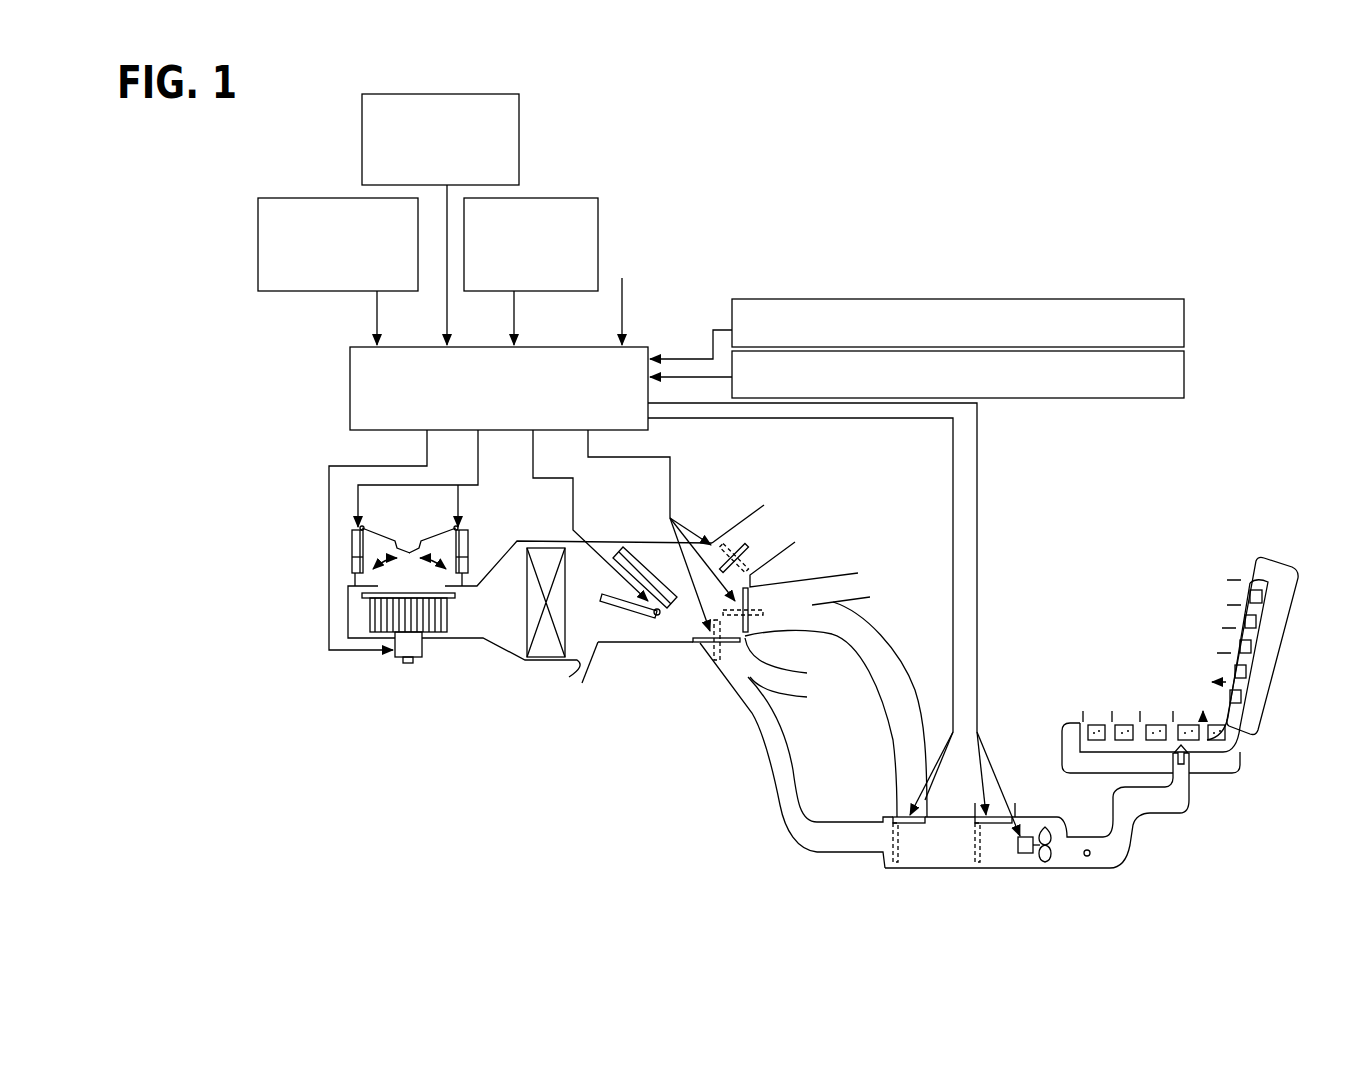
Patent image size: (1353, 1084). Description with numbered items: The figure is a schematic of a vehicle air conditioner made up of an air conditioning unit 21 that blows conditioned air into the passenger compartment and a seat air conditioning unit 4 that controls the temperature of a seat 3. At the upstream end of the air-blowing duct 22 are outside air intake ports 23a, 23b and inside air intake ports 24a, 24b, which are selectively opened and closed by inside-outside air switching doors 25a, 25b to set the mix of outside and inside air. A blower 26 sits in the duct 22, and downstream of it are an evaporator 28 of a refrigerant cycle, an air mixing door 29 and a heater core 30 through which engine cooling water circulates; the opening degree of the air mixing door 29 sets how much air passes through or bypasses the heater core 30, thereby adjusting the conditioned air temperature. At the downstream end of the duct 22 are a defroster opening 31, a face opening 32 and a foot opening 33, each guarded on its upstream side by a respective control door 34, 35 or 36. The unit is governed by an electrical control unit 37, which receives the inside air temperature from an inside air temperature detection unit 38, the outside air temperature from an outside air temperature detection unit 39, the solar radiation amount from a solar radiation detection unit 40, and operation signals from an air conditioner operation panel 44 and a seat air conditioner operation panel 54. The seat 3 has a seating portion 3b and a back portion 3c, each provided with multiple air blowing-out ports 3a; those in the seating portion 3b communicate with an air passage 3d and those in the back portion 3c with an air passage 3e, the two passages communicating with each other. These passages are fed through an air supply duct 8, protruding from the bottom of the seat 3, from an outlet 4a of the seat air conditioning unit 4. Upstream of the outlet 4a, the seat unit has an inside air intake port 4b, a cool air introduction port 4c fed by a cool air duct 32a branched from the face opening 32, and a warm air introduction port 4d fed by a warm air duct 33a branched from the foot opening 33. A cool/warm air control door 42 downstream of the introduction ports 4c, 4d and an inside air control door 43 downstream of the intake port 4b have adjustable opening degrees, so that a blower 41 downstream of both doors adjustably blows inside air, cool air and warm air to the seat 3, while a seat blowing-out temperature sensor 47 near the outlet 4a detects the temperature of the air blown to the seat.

The seat 3 is at (1218, 606).
The air blowing-out ports 3a is at (1160, 723).
The seating portion 3b is at (1070, 725).
The back portion 3c is at (1255, 562).
The air passage 3d is at (1097, 725).
The air passage 3e is at (1250, 657).
The seat air conditioning unit 4 is at (883, 875).
The outlet 4a is at (1067, 853).
The inside air intake port 4b is at (997, 805).
The cool air introduction port 4c is at (903, 808).
The warm air introduction port 4d is at (856, 846).
The air supply duct 8 is at (1123, 822).
The air conditioning unit 21 is at (551, 668).
The air-blowing duct 22 is at (655, 645).
The outside air intake port 23a is at (392, 530).
The outside air intake port 23b is at (428, 530).
The inside air intake port 24a is at (352, 548).
The inside air intake port 24b is at (468, 546).
The inside-outside air switching door 25a is at (350, 557).
The inside-outside air switching door 25b is at (470, 556).
The blower 26 is at (358, 614).
The evaporator 28 is at (523, 622).
The air mixing door 29 is at (623, 612).
The heater core 30 is at (640, 555).
The defroster opening 31 is at (773, 528).
The face opening 32 is at (855, 590).
The cool air duct 32a is at (875, 643).
The foot opening 33 is at (805, 683).
The warm air duct 33a is at (778, 757).
The control door 34 is at (733, 542).
The control door 35 is at (757, 598).
The control door 36 is at (703, 657).
The electrical control unit 37 is at (568, 347).
The inside air temperature detection unit 38 is at (300, 198).
The outside air temperature detection unit 39 is at (519, 122).
The solar radiation detection unit 40 is at (570, 198).
The blower 41 is at (1027, 853).
The cool/warm air control door 42 is at (915, 830).
The inside air control door 43 is at (997, 830).
The air conditioner operation panel 44 is at (1184, 320).
The seat blowing-out temperature sensor 47 is at (1145, 895).
The seat air conditioner operation panel 54 is at (1184, 372).